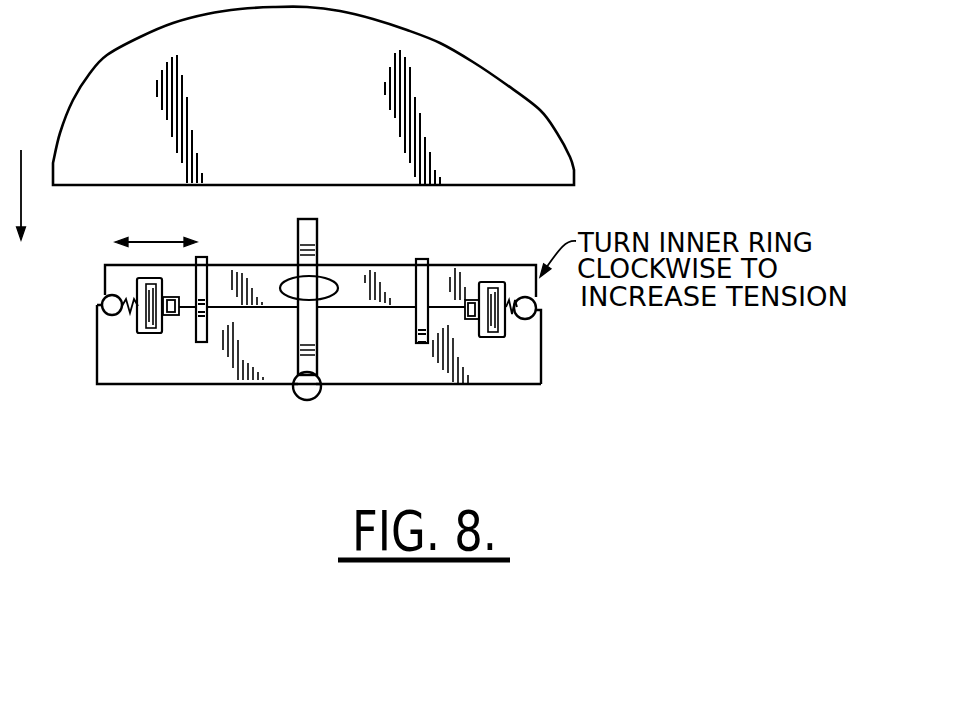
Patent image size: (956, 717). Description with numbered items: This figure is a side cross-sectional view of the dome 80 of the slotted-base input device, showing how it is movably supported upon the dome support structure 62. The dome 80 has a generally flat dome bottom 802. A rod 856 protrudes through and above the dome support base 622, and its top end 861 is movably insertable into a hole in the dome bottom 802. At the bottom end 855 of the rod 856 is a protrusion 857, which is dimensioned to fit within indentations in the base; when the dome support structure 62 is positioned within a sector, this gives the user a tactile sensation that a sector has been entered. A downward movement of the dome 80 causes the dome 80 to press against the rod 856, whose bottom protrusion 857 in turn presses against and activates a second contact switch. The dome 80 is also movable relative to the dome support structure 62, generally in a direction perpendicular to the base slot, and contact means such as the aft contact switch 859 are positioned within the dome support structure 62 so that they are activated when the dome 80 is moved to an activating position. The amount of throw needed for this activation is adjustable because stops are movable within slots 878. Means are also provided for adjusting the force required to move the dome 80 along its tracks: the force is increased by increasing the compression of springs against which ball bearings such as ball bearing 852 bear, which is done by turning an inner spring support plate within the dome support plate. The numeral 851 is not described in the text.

The dome 80 is at (508, 105).
The dome bottom 802 is at (108, 186).
The top end 861 is at (328, 222).
The slots 878 is at (462, 272).
The dome support structure 62 is at (580, 341).
The ball bearing 852 is at (504, 326).
The dome support base 622 is at (518, 368).
The aft contact switch 859 is at (139, 335).
The bottom end 855 is at (279, 385).
The rod 856 is at (316, 334).
The protrusion 857 is at (301, 404).
The pivot mount 851 is at (324, 421).